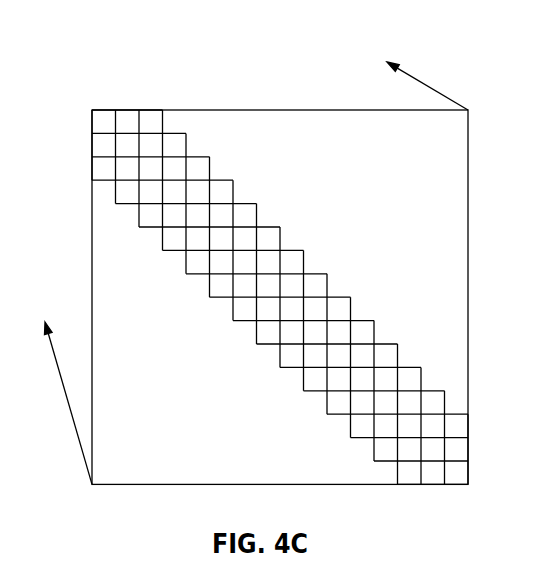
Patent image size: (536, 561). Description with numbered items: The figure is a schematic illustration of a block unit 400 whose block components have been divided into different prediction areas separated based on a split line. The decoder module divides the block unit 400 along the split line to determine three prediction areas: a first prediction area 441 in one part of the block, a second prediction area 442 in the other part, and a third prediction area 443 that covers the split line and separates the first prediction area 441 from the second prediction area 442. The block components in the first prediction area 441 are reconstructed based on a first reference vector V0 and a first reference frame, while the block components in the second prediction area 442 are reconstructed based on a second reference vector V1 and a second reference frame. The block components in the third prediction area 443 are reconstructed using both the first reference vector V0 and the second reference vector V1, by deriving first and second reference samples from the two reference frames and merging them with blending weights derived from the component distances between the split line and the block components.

The block unit 400 is at (325, 110).
The first prediction area 441 is at (423, 228).
The second prediction area 442 is at (257, 415).
The third prediction area 443 is at (335, 297).
The first reference vector V0 is at (428, 83).
The second reference vector V1 is at (63, 385).